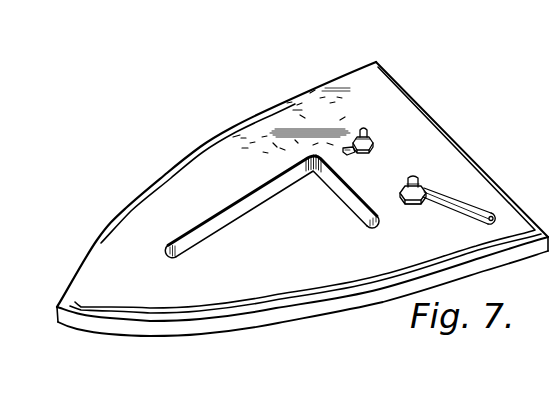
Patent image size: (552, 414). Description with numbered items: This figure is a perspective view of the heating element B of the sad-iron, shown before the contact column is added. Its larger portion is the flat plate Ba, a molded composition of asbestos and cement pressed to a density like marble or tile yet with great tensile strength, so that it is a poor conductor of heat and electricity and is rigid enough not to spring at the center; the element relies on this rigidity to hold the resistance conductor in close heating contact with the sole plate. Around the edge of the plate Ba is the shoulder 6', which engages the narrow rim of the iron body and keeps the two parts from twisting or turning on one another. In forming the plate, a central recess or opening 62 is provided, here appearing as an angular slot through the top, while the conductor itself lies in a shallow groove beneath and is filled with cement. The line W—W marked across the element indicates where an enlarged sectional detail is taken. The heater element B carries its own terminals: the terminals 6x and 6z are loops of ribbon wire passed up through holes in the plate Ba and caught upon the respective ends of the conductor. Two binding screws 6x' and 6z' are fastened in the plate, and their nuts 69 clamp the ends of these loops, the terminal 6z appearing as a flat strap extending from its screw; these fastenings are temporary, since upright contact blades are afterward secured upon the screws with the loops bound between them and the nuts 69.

The heating element B is at (302, 191).
The flat plate of insulating material Ba is at (254, 352).
The shoulder 6' is at (302, 300).
The central recess or opening 62 is at (285, 233).
The section line W— W is at (350, 130).
The terminal 6x is at (289, 106).
The binding screw 6x' is at (403, 94).
The binding screw 6z' is at (452, 136).
The terminal 6z is at (469, 182).
The nuts 69 is at (413, 205).